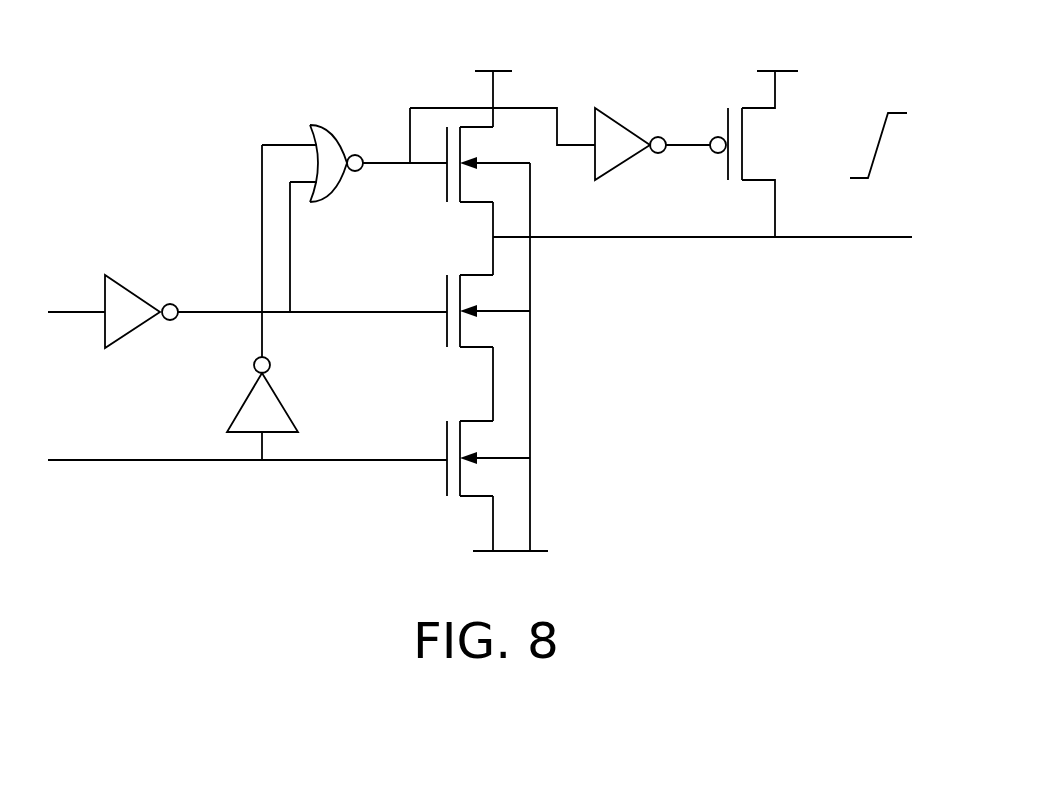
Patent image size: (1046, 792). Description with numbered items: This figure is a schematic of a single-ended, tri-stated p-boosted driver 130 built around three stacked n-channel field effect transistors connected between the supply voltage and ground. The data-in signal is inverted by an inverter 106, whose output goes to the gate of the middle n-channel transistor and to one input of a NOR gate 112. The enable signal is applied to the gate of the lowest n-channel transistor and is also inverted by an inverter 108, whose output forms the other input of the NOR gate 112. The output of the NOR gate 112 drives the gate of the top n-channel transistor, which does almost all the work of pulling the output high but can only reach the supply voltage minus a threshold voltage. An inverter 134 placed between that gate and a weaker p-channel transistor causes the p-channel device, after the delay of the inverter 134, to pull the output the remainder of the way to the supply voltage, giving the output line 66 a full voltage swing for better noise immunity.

The driver 130 is at (190, 101).
The inverter 106 is at (124, 287).
The inverter 108 is at (245, 405).
The NOR gate 112 is at (345, 183).
The inverter 134 is at (625, 123).
The output node Q 66 is at (658, 238).